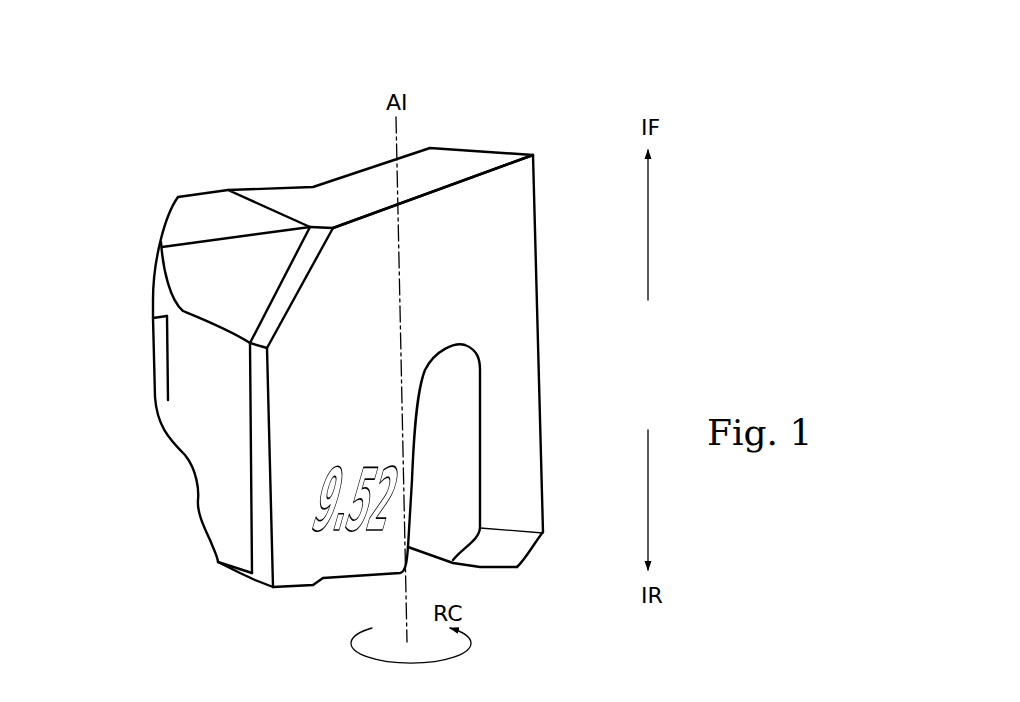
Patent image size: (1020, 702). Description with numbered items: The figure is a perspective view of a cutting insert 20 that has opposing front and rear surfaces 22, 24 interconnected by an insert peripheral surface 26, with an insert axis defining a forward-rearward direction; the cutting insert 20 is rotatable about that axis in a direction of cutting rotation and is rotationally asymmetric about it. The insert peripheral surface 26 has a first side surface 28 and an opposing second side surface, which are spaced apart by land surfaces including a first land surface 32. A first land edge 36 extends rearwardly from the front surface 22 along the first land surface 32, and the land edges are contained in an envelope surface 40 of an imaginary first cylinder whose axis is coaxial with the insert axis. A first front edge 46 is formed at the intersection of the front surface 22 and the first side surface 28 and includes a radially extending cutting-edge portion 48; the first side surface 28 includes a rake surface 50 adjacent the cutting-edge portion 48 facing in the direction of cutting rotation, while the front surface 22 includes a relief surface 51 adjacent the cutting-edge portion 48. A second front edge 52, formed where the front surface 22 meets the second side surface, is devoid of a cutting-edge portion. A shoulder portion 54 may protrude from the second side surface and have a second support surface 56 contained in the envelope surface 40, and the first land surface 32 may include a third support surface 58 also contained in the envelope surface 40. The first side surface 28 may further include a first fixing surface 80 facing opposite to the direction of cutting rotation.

The cutting insert 20 is at (597, 88).
The front surface 22 is at (433, 170).
The rear surface 24 is at (327, 585).
The insert peripheral surface 26 is at (517, 342).
The first side surface 28 is at (505, 243).
The first land surface 32 is at (262, 502).
The first land edge 36 is at (268, 473).
The envelope surface 40 is at (593, 701).
The first front edge 46 is at (480, 180).
The cutting-edge portion 48 is at (292, 303).
The rake surface 50 is at (318, 278).
The relief surface 51 is at (262, 268).
The second front edge 52 is at (338, 175).
The shoulder portion 54 is at (158, 315).
The second support surface 56 is at (160, 357).
The third support surface 58 is at (263, 540).
The first fixing surface 80 is at (486, 324).